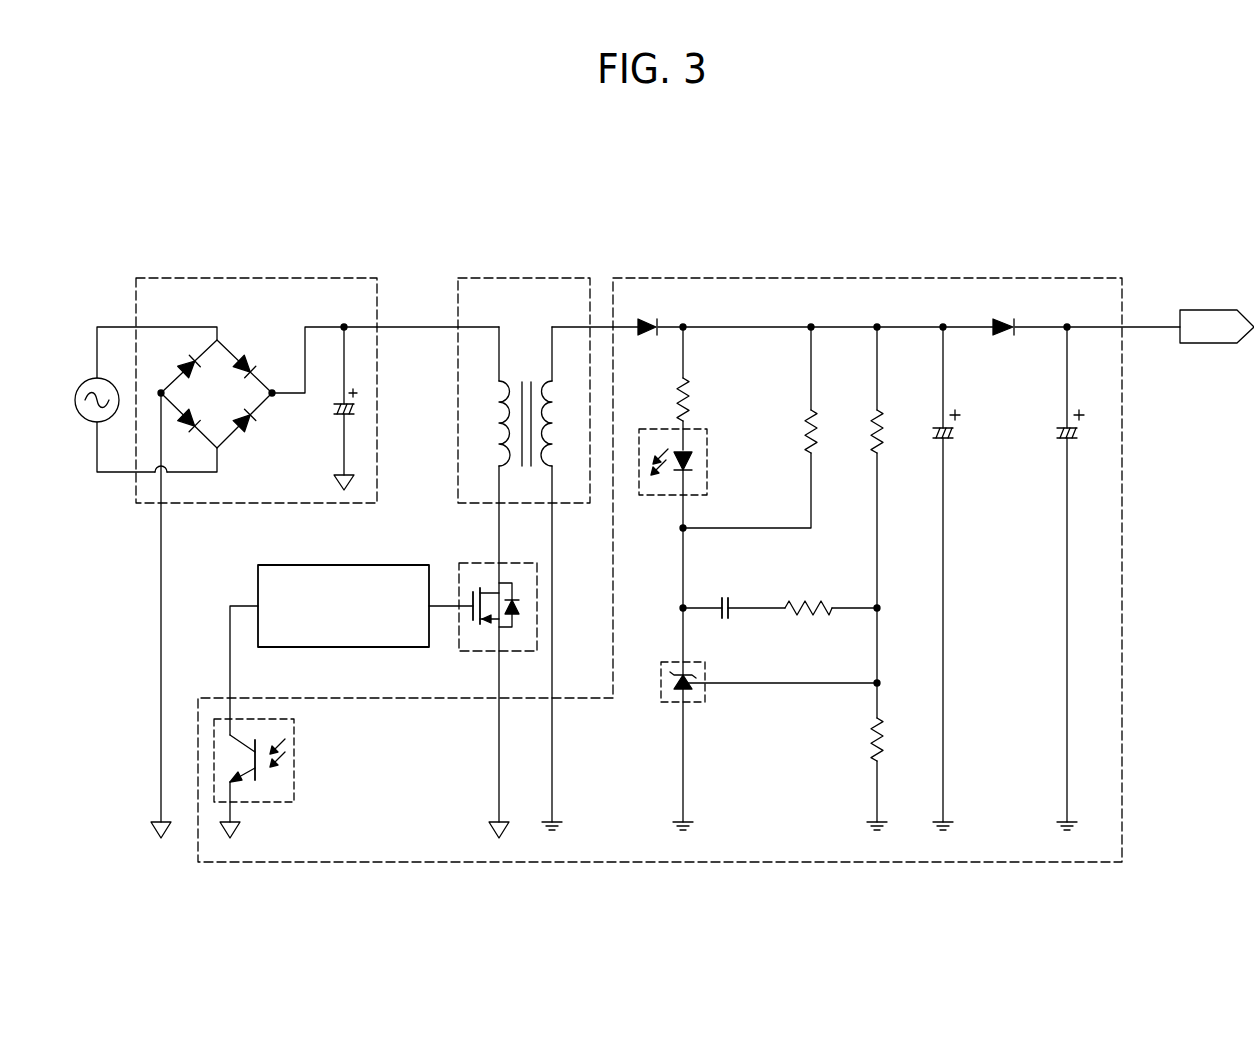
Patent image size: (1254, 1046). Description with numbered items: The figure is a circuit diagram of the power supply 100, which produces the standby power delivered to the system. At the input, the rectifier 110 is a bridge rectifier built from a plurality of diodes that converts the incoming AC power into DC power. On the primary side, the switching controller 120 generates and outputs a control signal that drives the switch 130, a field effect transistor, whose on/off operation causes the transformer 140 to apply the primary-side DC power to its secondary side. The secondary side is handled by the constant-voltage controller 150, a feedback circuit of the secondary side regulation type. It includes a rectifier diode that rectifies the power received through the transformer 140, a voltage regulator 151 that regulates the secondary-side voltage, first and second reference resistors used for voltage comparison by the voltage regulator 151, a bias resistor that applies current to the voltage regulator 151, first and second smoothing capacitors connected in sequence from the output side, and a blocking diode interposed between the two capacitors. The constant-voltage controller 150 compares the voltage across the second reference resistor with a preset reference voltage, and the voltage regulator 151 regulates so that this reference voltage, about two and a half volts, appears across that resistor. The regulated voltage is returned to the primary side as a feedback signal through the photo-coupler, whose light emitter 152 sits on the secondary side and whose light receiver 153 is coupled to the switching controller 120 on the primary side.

The power supply 100 is at (980, 212).
The rectifier 110 is at (256, 278).
The switching controller 120 is at (258, 582).
The switch 130 is at (482, 652).
The transformer 140 is at (523, 278).
The constant-voltage controller 150 is at (808, 278).
The voltage regulator 151 is at (708, 702).
The photo-coupler (light emitter) 152 is at (707, 495).
The photo-coupler (light receiver) 153 is at (294, 802).